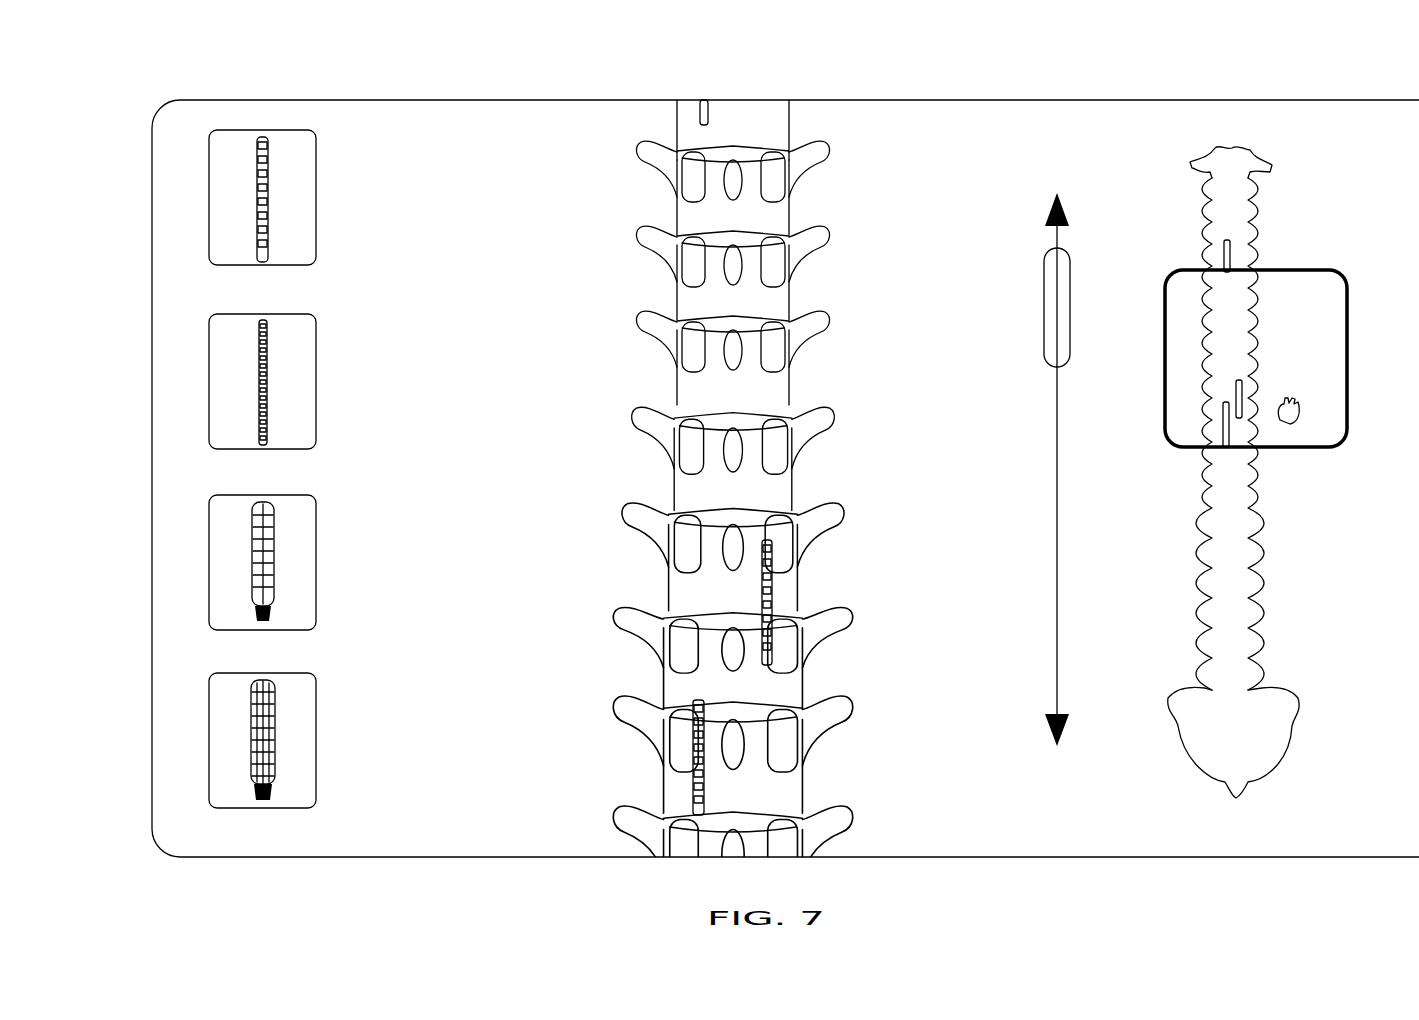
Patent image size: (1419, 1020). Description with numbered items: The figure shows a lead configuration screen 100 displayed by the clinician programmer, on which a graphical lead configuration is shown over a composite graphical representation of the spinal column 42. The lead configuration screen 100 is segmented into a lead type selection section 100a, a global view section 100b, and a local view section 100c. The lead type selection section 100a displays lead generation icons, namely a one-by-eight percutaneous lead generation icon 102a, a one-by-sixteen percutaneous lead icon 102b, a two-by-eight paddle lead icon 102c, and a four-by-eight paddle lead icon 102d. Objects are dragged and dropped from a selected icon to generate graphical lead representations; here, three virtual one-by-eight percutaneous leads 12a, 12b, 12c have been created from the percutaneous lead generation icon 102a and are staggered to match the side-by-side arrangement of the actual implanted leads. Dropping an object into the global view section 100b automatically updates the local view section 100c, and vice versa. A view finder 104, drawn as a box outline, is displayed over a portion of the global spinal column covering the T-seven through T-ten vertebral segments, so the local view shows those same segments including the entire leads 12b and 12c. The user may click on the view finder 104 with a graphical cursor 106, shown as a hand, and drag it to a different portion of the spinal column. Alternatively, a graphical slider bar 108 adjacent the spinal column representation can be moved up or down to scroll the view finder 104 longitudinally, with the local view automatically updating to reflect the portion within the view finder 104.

The lead configuration screen 100 is at (772, 50).
The lead type selection section 100a is at (252, 100).
The global view section 100b is at (1218, 100).
The local view section 100c is at (607, 100).
The 1×8 percutaneous lead generation icon 102a is at (218, 203).
The 1×16 percutaneous lead generation icon 102b is at (210, 375).
The 2×8 paddle lead generation icon 102c is at (210, 548).
The 4×8 paddle lead generation icon 102d is at (210, 733).
The virtual 1×8 percutaneous lead 12a is at (700, 112).
The virtual 1×8 percutaneous lead 12b is at (760, 600).
The virtual 1×8 percutaneous lead 12c is at (693, 735).
The composite graphical representation of the spinal column 42 is at (674, 381).
The view finder 104 is at (1348, 310).
The graphical cursor 106 is at (1300, 410).
The graphical slider bar 108 is at (1044, 272).